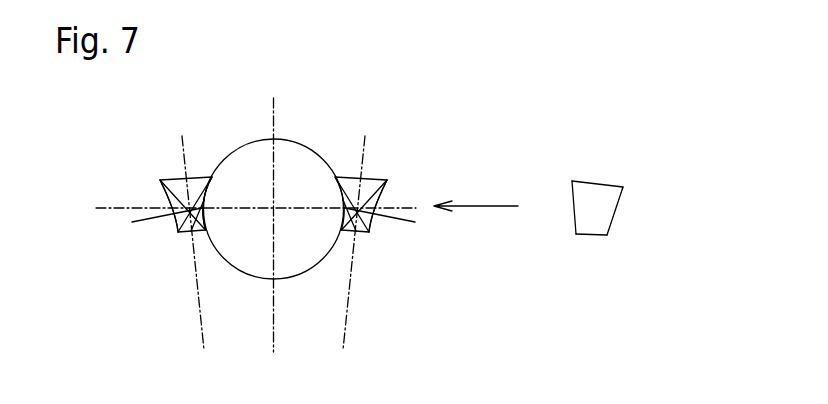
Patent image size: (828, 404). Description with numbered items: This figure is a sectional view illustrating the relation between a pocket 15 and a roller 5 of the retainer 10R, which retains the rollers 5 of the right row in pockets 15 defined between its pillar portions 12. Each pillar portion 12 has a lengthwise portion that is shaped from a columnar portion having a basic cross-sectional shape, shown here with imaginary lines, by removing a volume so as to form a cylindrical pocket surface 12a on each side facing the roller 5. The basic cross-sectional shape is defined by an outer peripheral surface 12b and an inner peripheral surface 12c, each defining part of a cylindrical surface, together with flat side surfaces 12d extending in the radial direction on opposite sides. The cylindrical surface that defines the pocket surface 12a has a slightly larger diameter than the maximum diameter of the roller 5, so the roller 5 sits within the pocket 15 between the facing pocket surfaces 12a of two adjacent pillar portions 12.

The roller 5 is at (292, 157).
The retainer 10R is at (389, 174).
The pillar portion 12 is at (180, 187).
The pocket surface 12a is at (177, 223).
The outer peripheral surface 12b is at (600, 183).
The inner peripheral surface 12c is at (592, 237).
The flat side surface 12d is at (575, 207).
The pocket 15 is at (228, 193).